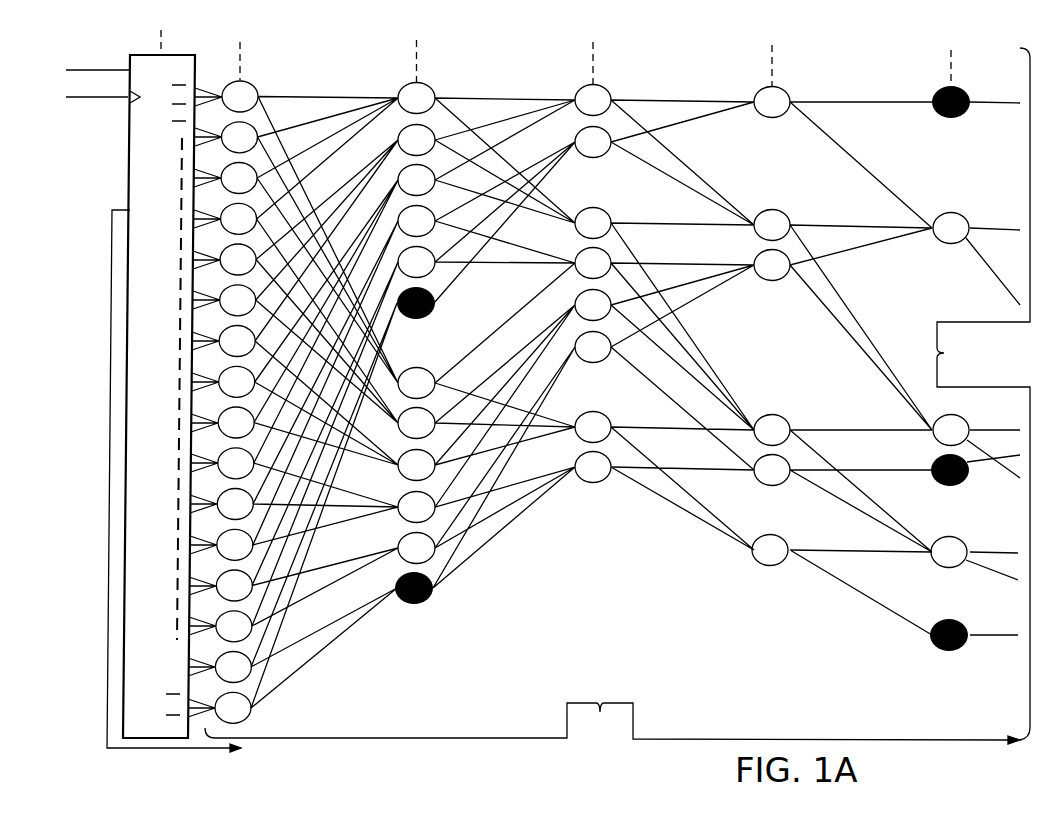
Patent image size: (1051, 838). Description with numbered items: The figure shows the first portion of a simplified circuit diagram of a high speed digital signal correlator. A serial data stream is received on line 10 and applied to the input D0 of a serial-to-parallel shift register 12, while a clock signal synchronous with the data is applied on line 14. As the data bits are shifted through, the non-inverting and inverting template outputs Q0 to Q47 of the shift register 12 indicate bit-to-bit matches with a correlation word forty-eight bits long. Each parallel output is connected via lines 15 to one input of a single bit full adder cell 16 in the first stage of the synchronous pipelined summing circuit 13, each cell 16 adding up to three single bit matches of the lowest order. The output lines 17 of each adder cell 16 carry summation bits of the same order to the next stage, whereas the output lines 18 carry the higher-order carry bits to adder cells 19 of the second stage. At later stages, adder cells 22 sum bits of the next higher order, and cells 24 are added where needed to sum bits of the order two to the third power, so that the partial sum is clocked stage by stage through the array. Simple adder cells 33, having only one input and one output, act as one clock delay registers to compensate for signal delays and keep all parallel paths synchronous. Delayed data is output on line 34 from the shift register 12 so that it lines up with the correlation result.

The line 10 is at (118, 72).
The serial-to-parallel shift register 12 is at (137, 168).
The summing circuit 13 is at (617, 416).
The line 14 is at (97, 99).
The lines 15 is at (205, 122).
The single bit full adder cell 16 is at (257, 88).
The output lines 17 is at (382, 187).
The output lines 18 is at (513, 348).
The adder cells 19 is at (770, 212).
The adder cells 22 is at (788, 458).
The cells 24 is at (773, 565).
The simple adder cells 33 is at (430, 314).
The line 34 is at (171, 212).